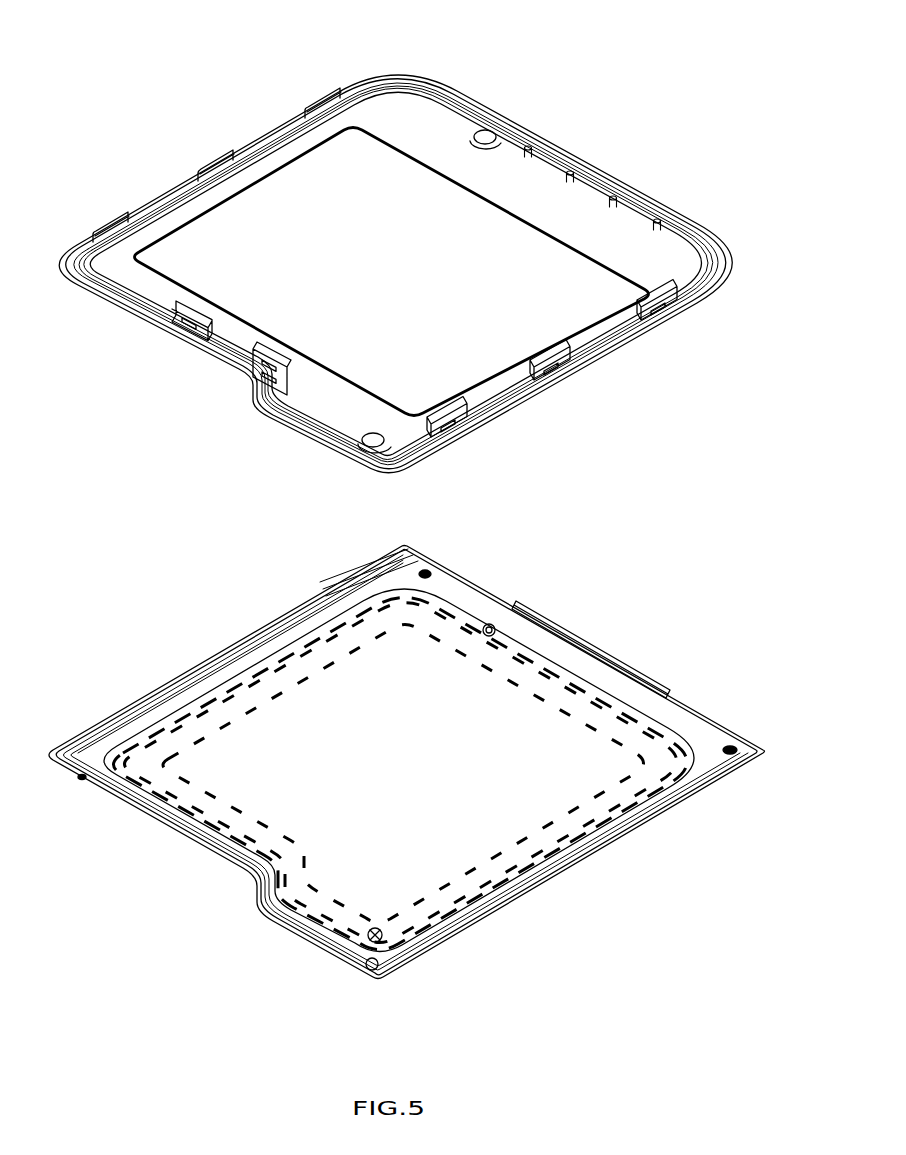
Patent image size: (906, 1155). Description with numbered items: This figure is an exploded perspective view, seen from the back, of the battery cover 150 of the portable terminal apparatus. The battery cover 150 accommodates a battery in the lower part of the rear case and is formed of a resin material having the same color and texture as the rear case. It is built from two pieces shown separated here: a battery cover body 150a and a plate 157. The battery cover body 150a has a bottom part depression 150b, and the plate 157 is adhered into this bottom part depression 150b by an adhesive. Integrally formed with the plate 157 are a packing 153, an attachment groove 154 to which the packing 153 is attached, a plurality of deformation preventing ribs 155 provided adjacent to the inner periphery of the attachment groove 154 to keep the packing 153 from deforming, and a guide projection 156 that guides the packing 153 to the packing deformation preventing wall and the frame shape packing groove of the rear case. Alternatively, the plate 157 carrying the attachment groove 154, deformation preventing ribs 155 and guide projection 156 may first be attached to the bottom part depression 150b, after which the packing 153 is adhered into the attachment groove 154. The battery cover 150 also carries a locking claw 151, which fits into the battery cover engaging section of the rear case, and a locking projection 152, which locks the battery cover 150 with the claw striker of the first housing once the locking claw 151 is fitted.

The battery cover 150 is at (693, 66).
The battery cover body 150a is at (443, 580).
The bottom part depression 150b is at (677, 723).
The locking claw 151 is at (573, 634).
The locking projection 152 is at (247, 384).
The packing 153 is at (421, 82).
The attachment groove 154 is at (686, 220).
The deformation preventing ribs 155 is at (581, 160).
The guide projection 156 is at (155, 326).
The plate 157 is at (622, 214).